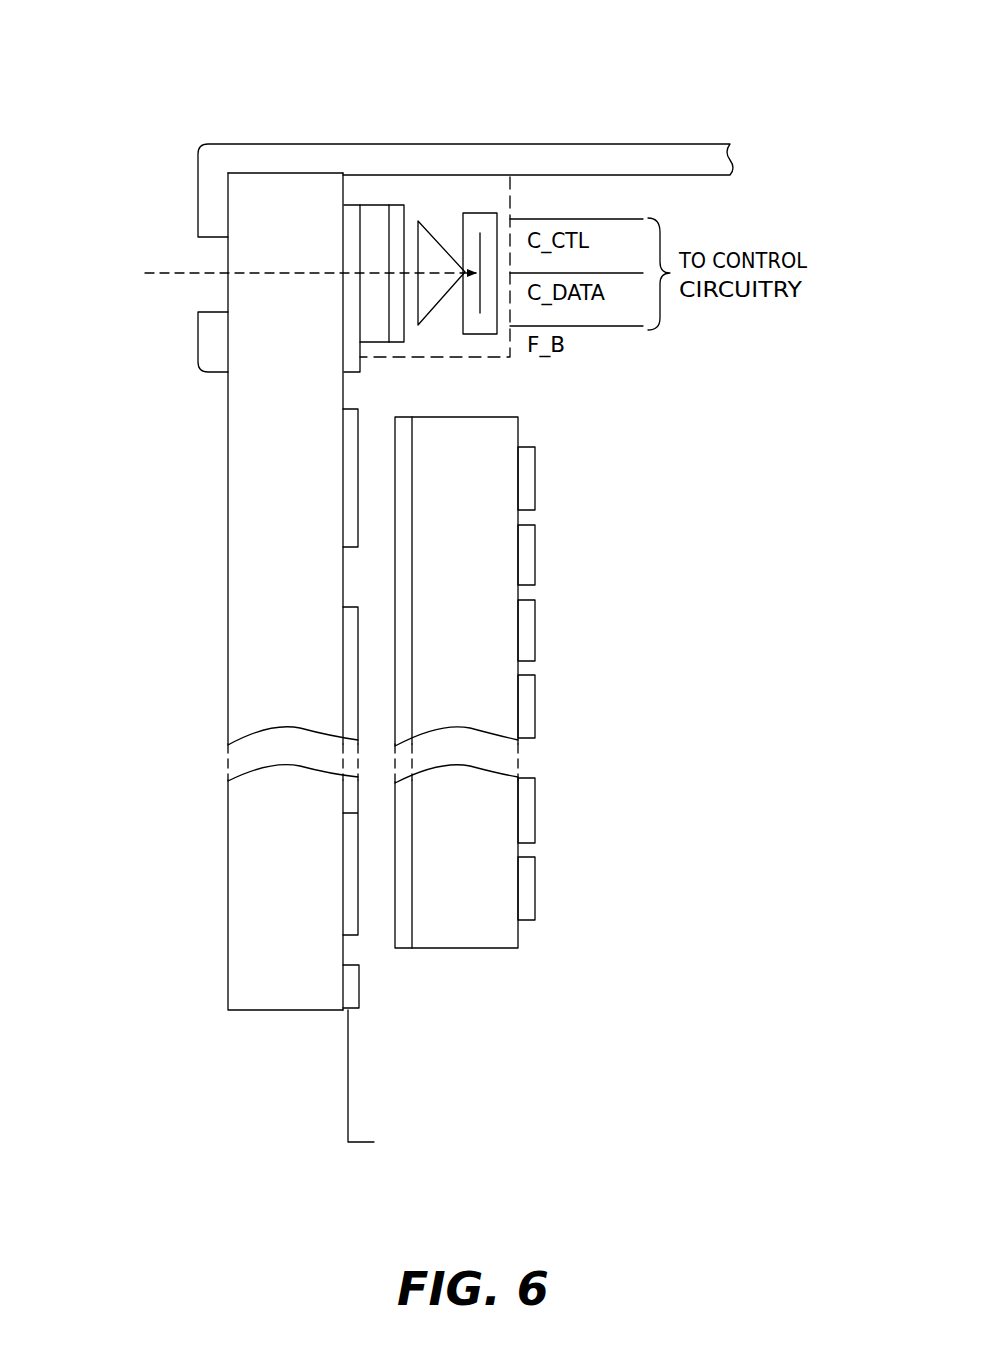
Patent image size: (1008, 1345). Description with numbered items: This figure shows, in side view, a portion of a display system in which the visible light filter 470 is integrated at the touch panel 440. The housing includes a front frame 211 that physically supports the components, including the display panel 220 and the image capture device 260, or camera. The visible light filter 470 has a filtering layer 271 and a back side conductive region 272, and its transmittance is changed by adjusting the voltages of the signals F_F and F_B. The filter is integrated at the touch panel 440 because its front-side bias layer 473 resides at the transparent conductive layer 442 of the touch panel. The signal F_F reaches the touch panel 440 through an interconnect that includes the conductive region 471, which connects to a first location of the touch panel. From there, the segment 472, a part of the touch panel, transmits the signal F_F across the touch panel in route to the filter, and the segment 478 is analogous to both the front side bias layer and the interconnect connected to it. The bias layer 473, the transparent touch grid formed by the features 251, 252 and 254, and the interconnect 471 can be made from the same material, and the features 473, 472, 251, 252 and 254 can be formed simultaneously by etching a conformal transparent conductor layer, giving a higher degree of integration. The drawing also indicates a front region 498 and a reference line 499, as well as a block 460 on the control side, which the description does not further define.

The front frame 211 is at (198, 165).
The signal communication path segment 478 is at (228, 437).
The front side of device 498 is at (168, 244).
The optical axis / light path 499 is at (257, 270).
The front-side bias layer 473 is at (352, 205).
The filtering layer 271 is at (376, 205).
The back side conductive region 272 is at (397, 205).
The sensor circuit block 460 is at (530, 205).
The visible light filter 470 is at (425, 204).
The image capture device 260 is at (490, 212).
The transparent touch grid feature 251 is at (360, 413).
The transparent touch grid feature 252 is at (360, 620).
The transparent touch grid feature 254 is at (360, 840).
The signal communication path segment 472 is at (360, 995).
The display panel 220 is at (505, 980).
The interconnect 471 is at (350, 1080).
The touch panel 440 is at (250, 1068).
The transparent conductive layer 442 is at (331, 1048).